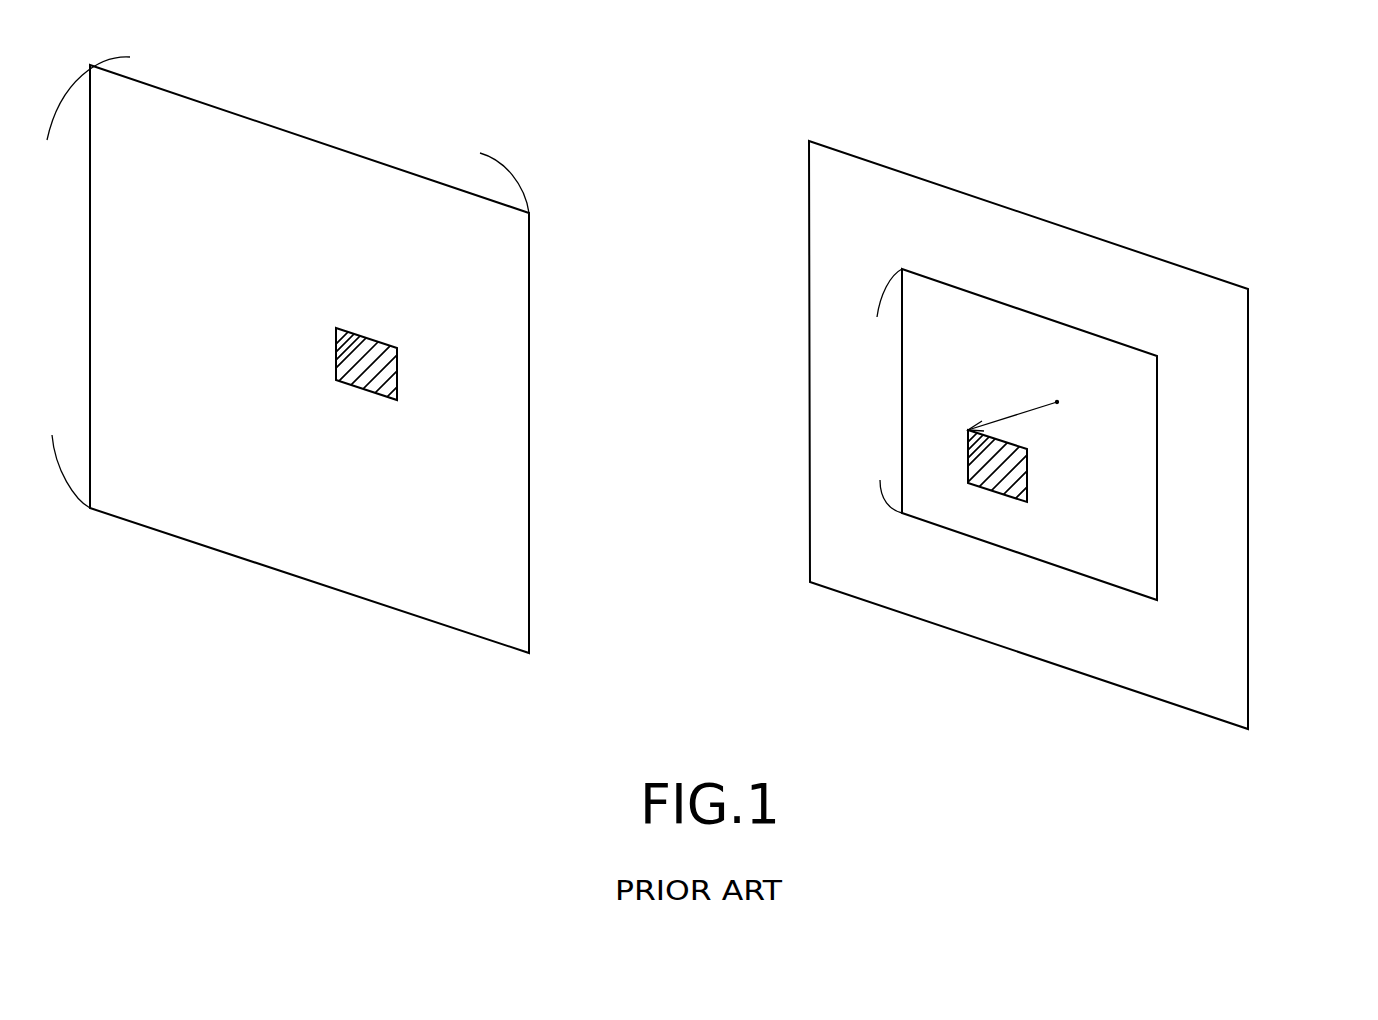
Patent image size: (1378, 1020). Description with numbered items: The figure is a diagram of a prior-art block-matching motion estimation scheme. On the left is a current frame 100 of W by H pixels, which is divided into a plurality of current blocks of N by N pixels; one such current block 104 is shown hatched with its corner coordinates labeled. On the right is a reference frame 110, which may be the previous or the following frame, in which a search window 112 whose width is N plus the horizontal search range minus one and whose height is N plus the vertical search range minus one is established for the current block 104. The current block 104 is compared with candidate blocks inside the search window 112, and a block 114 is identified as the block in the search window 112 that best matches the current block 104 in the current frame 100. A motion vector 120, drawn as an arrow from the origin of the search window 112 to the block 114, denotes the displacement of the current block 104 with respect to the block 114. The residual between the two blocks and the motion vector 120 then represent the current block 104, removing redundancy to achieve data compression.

The current frame 100 is at (347, 594).
The current block 104 is at (397, 372).
The reference frame 110 is at (1063, 667).
The search window 112 is at (1157, 488).
The block 114 is at (993, 490).
The motion vector 120 is at (1020, 417).